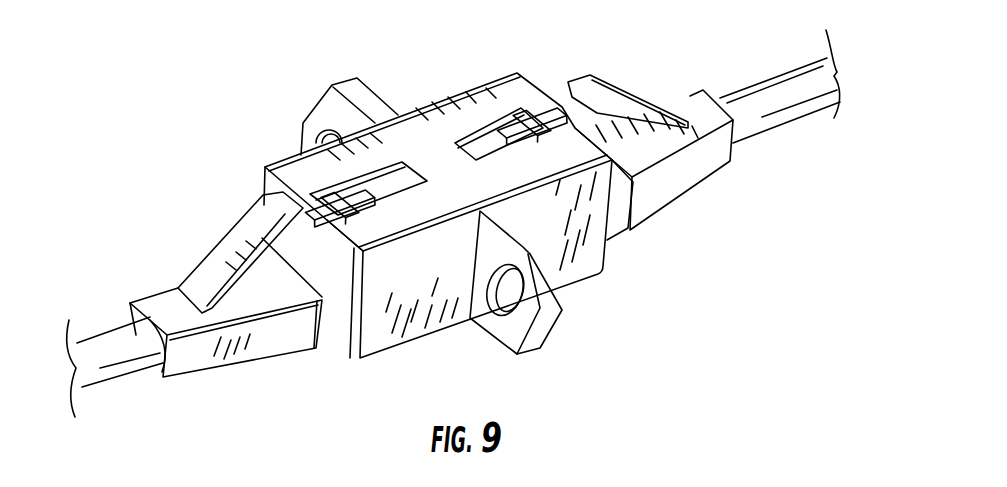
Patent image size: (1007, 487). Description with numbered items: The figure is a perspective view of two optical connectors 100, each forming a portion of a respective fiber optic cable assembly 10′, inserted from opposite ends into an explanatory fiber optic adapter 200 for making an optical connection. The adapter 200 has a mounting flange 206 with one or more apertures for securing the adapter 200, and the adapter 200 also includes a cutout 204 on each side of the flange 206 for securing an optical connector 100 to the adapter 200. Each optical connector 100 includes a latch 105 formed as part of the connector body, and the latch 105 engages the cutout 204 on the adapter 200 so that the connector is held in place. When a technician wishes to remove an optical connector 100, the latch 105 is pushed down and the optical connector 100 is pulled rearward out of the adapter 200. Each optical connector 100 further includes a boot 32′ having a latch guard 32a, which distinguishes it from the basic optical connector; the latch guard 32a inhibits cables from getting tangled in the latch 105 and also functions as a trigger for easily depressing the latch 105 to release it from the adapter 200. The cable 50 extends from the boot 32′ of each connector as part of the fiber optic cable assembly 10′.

The fiber optic cable assembly 10′ is at (470, 236).
The boot 32′ is at (172, 298).
The latch guard 32a is at (258, 222).
The cable 50 is at (125, 368).
The optical connector 100 is at (425, 210).
The latch 105 is at (328, 198).
The fiber optic adapter 200 is at (435, 202).
The cutout 204 is at (368, 212).
The mounting flange 206 is at (340, 82).